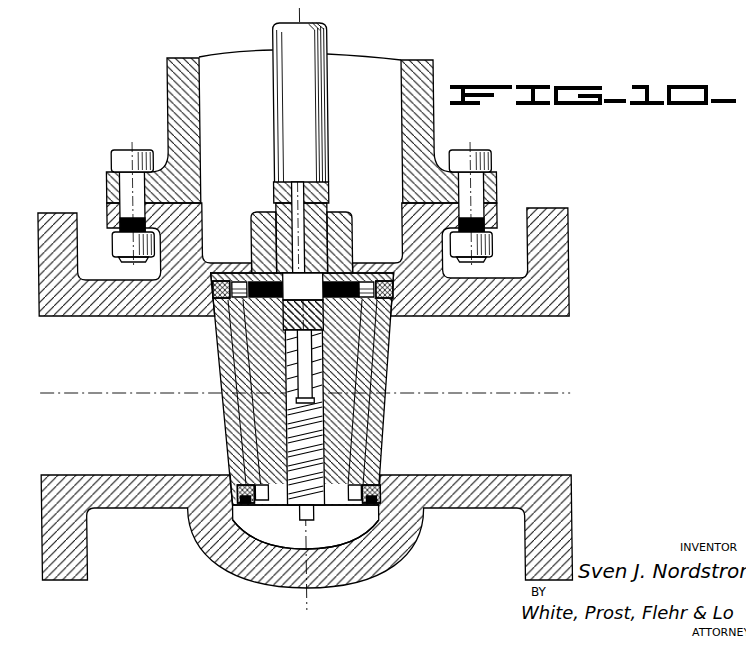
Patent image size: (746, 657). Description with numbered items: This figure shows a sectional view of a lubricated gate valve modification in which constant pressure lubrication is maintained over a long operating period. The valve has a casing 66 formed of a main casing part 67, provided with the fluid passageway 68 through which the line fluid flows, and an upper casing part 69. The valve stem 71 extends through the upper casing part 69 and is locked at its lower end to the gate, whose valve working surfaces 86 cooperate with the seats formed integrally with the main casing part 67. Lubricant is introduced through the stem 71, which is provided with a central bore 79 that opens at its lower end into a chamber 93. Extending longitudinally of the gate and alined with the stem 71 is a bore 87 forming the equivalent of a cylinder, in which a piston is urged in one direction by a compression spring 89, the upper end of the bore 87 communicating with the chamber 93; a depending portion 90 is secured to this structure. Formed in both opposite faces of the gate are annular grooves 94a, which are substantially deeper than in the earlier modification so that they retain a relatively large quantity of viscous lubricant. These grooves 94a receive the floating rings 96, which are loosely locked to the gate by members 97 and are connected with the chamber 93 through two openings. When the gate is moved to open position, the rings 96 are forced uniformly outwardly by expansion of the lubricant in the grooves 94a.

The casing 66 is at (571, 225).
The main casing part 67 is at (562, 292).
The fluid passageway 68 is at (562, 346).
The upper casing part 69 is at (173, 90).
The valve stem 71 is at (329, 103).
The central bore 79 is at (316, 200).
The valve working surfaces of the gate 86 is at (382, 412).
The bore 87 is at (320, 390).
The compression spring 89 is at (318, 450).
The depending portion 90 is at (326, 352).
The chamber 93 is at (303, 301).
The annular grooves 94a is at (239, 287).
The floating rings 96 is at (224, 300).
The members 97 is at (243, 526).